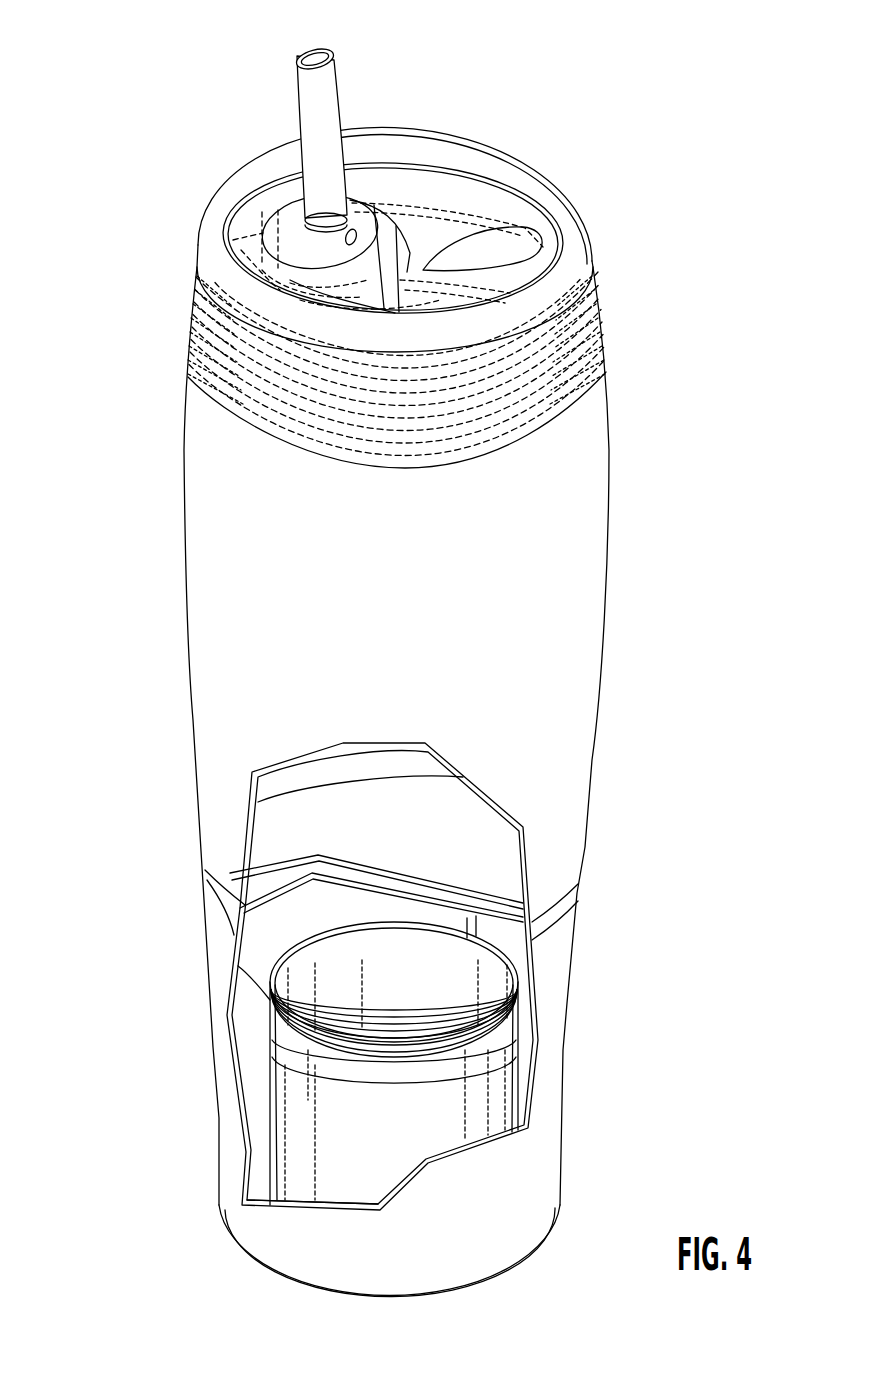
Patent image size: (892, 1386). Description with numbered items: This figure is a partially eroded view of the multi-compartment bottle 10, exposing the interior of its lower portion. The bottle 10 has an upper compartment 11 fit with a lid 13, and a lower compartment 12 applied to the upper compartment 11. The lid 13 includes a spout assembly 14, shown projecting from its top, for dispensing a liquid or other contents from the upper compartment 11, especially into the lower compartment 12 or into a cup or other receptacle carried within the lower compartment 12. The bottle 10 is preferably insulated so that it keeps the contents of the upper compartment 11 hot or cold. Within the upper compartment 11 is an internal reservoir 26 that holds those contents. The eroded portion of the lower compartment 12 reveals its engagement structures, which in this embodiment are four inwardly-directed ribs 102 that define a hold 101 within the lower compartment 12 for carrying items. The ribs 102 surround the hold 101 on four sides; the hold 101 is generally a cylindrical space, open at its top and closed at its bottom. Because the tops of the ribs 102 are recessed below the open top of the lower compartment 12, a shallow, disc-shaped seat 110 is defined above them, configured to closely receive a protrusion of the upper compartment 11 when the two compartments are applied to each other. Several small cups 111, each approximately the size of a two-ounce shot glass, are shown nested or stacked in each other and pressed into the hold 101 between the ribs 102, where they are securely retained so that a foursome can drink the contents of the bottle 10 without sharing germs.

The multi-compartment bottle 10 is at (742, 87).
The upper compartment 11 is at (172, 711).
The lower compartment 12 is at (192, 1146).
The lid 13 is at (172, 303).
The spout assembly 14 is at (370, 110).
The internal reservoir 26 is at (348, 789).
The hold 101 is at (418, 964).
The ribs 102 is at (483, 930).
The seat 110 is at (265, 945).
The cup 111 is at (300, 1148).